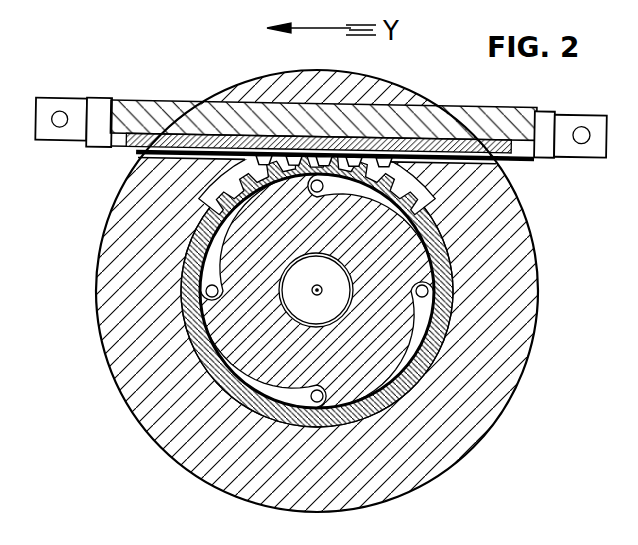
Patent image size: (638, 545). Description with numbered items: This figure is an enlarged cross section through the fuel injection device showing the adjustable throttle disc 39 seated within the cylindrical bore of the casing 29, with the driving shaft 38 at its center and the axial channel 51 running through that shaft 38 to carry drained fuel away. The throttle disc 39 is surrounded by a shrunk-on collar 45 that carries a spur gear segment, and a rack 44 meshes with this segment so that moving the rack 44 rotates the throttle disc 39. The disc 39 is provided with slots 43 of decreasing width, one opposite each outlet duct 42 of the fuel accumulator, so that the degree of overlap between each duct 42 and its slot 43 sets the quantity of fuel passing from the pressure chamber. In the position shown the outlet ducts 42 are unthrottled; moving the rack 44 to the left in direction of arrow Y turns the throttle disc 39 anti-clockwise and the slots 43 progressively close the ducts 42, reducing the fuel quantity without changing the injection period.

The casing 29 is at (137, 252).
The driving shaft 38 is at (290, 298).
The throttle disc 39 is at (368, 220).
The outlet ducts 42 is at (430, 289).
The slots 43 is at (410, 347).
The rack 44 is at (167, 108).
The shrunk-on collar 45 is at (426, 241).
The axial channel 51 is at (314, 295).